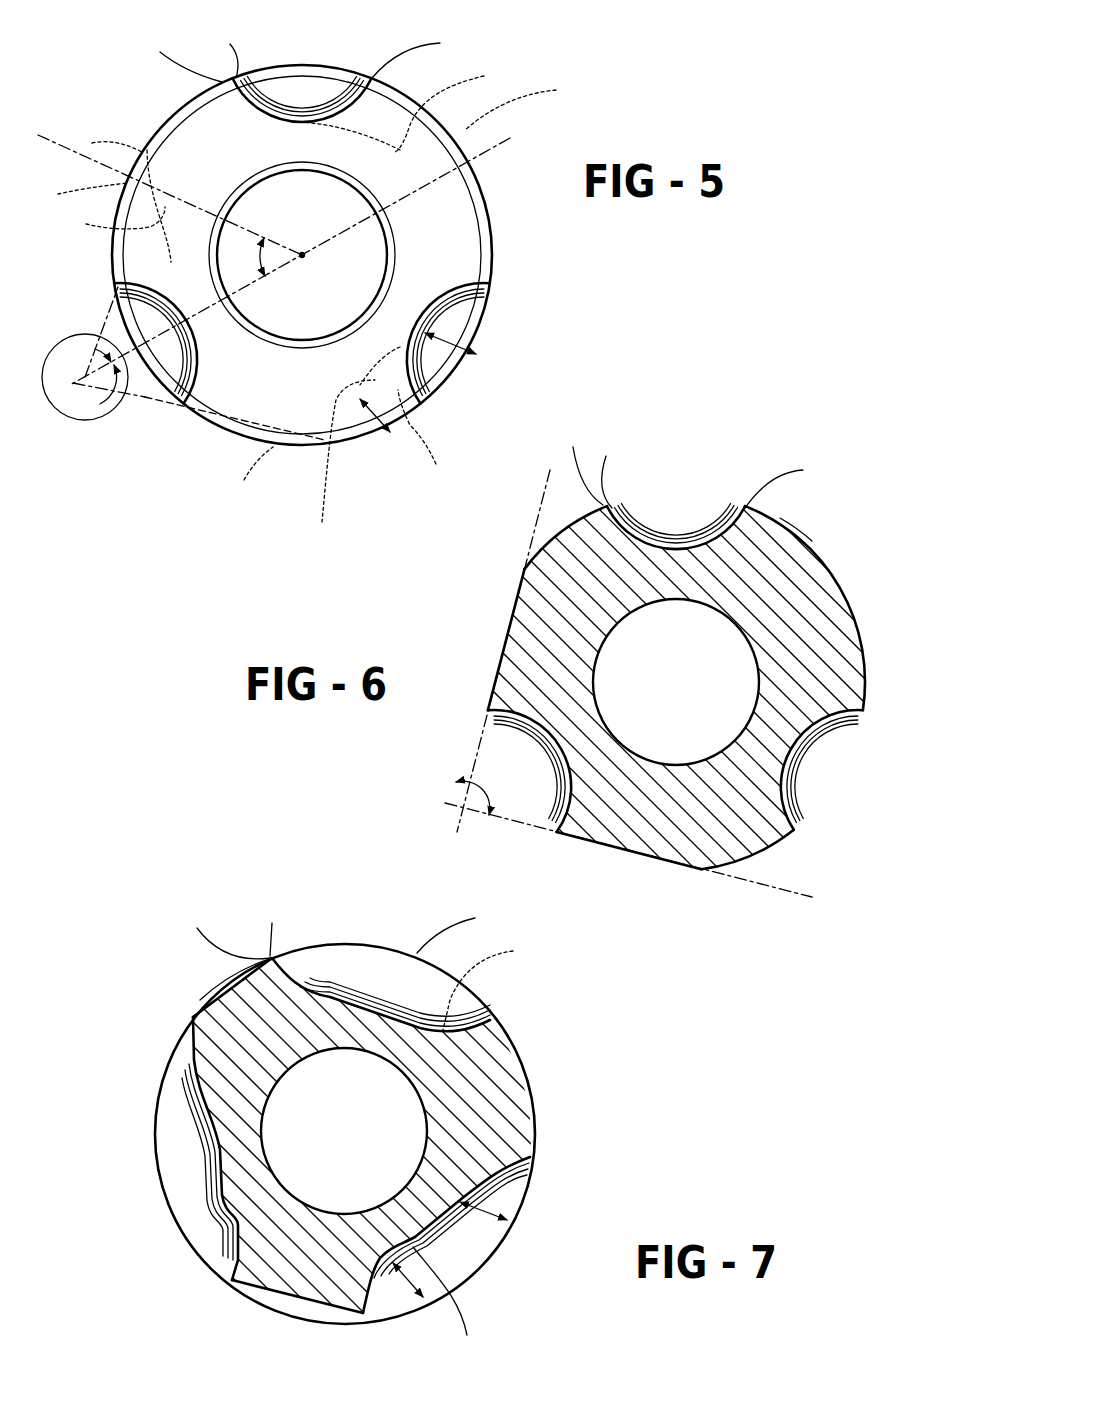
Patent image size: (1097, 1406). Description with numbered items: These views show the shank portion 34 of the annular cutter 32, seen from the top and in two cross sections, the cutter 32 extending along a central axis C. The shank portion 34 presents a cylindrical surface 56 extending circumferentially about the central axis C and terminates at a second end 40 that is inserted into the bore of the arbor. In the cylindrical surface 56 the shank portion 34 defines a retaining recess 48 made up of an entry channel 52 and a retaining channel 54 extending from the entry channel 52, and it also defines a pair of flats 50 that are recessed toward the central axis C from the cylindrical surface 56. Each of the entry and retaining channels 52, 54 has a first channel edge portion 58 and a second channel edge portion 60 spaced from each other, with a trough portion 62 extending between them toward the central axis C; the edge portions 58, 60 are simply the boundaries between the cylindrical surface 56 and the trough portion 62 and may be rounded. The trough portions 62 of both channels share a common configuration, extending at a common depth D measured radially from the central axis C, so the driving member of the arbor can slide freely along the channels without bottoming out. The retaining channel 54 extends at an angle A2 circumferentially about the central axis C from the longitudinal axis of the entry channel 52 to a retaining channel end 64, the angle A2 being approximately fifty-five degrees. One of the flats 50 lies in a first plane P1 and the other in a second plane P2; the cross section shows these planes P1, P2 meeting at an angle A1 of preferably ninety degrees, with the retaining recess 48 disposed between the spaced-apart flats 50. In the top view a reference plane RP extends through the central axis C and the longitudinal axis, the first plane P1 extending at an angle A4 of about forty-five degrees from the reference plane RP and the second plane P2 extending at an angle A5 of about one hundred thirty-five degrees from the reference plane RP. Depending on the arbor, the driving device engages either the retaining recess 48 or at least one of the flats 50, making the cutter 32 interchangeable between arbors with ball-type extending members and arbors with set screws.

In FIG. 5, the annular cutter 32 is at (152, 126).
In FIG. 6, the annular cutter 32 is at (795, 520).
In FIG. 7, the annular cutter 32 is at (200, 998).
In FIG. 5, the shank portion 34 is at (493, 232).
In FIG. 6, the shank portion 34 is at (818, 548).
In FIG. 7, the shank portion 34 is at (535, 1104).
In FIG. 5, the second end 40 is at (462, 197).
In FIG. 6, the second end 40 is at (657, 682).
In FIG. 7, the second end 40 is at (503, 1073).
In FIG. 5, the retaining recess 48 is at (303, 82).
In FIG. 6, the retaining recess 48 is at (672, 505).
In FIG. 7, the retaining recess 48 is at (341, 953).
In FIG. 5, the pair of flats 50 is at (194, 314).
In FIG. 6, the pair of flats 50 is at (522, 576).
In FIG. 7, the pair of flats 50 is at (197, 1033).
In FIG. 5, the entry channel 52 is at (340, 82).
In FIG. 6, the entry channel 52 is at (710, 507).
In FIG. 7, the entry channel 52 is at (378, 957).
In FIG. 5, the retaining channel 54 is at (285, 273).
In FIG. 7, the retaining channel 54 is at (128, 1099).
In FIG. 5, the cylindrical surface 56 is at (181, 55).
In FIG. 6, the cylindrical surface 56 is at (578, 463).
In FIG. 7, the cylindrical surface 56 is at (224, 932).
In FIG. 5, the first channel edge portion 58 is at (223, 49).
In FIG. 6, the first channel edge portion 58 is at (611, 469).
In FIG. 7, the first channel edge portion 58 is at (262, 927).
In FIG. 5, the second channel edge portion 60 is at (420, 52).
In FIG. 6, the second channel edge portion 60 is at (788, 481).
In FIG. 7, the second channel edge portion 60 is at (460, 928).
In FIG. 5, the trough portion 62 is at (280, 118).
In FIG. 6, the trough portion 62 is at (640, 545).
In FIG. 7, the trough portion 62 is at (303, 992).
In FIG. 5, the retaining channel end 64 is at (308, 312).
In FIG. 5, the reference plane RP is at (314, 254).
In FIG. 5, the central axis C is at (304, 256).
In FIG. 5, the angle A2 is at (170, 205).
In FIG. 5, the angle A4 is at (63, 350).
In FIG. 5, the angle A5 is at (68, 420).
In FIG. 5, the common depth D is at (472, 334).
In FIG. 7, the common depth D is at (497, 1206).
In FIG. 6, the first plane P1 is at (503, 642).
In FIG. 6, the second plane P2 is at (635, 871).
In FIG. 6, the angle A1 is at (458, 794).